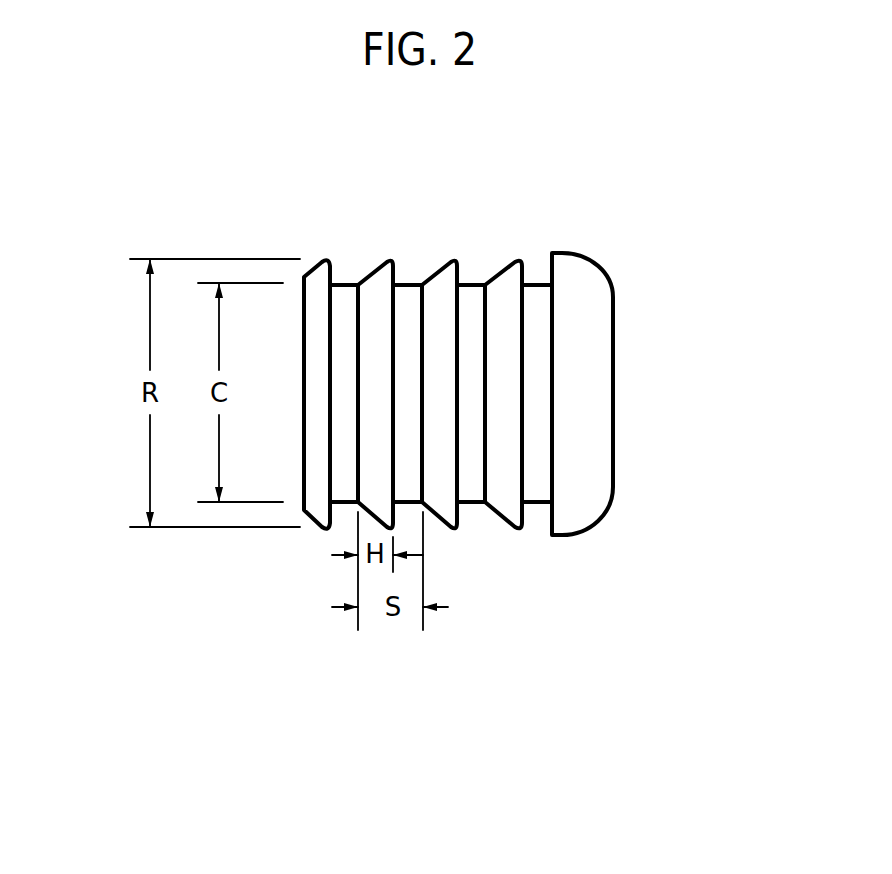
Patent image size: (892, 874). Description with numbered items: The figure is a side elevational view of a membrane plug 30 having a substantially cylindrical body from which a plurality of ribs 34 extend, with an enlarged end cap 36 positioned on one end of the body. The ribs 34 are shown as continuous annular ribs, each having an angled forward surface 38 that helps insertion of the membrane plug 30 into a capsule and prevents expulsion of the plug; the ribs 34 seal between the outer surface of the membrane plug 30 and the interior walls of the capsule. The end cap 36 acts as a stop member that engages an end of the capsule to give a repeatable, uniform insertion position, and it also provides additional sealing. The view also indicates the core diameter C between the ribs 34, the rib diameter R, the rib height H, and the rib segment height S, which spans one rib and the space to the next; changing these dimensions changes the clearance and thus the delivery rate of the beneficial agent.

The membrane plug 30 is at (449, 435).
The ribs 34 is at (502, 273).
The end cap 36 is at (613, 298).
The angled forward surface 38 is at (435, 272).